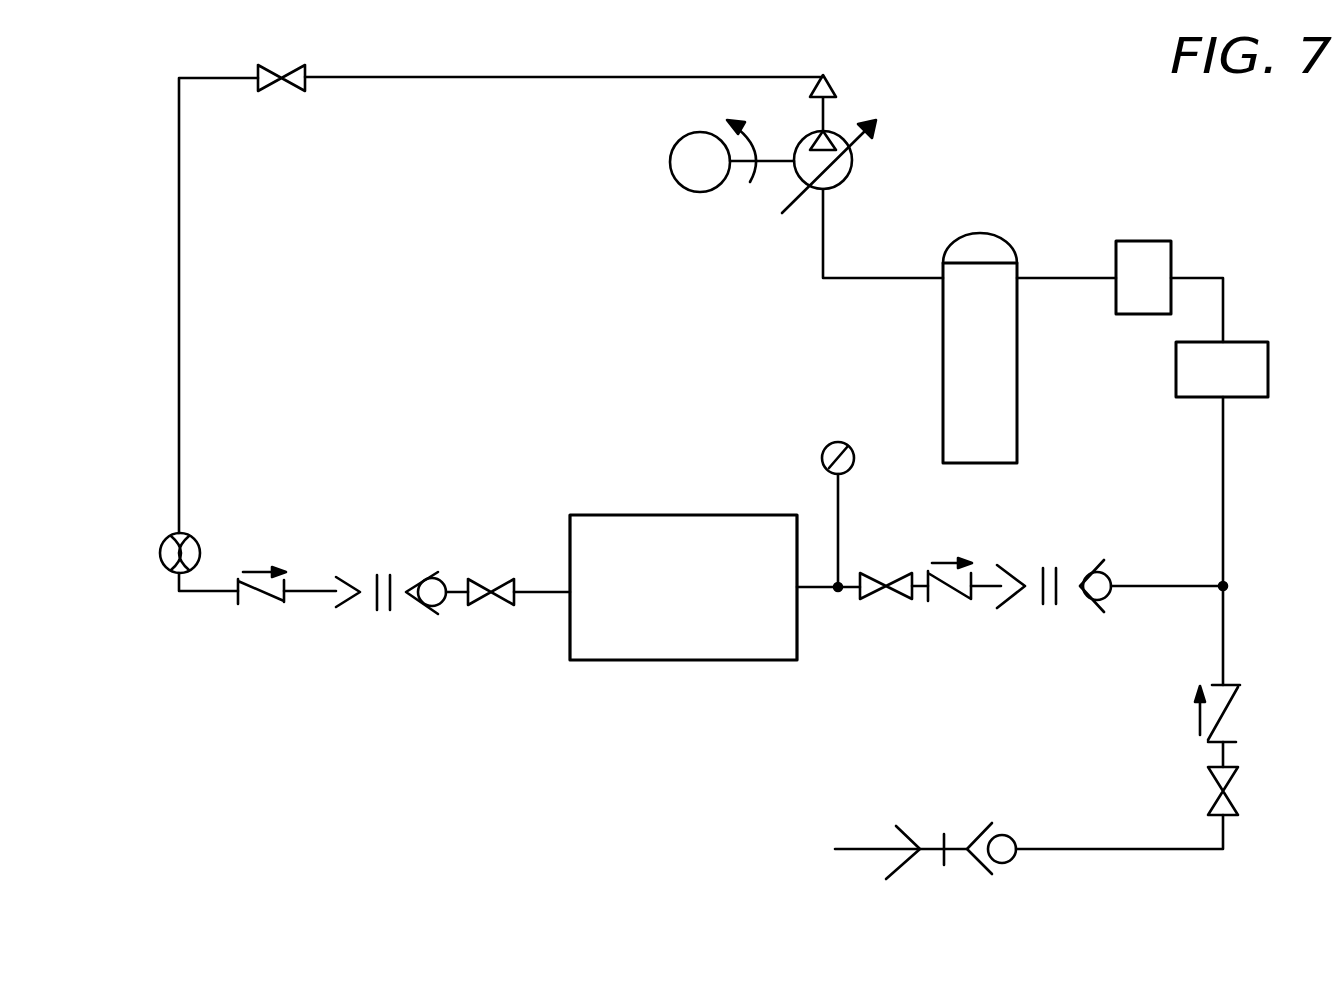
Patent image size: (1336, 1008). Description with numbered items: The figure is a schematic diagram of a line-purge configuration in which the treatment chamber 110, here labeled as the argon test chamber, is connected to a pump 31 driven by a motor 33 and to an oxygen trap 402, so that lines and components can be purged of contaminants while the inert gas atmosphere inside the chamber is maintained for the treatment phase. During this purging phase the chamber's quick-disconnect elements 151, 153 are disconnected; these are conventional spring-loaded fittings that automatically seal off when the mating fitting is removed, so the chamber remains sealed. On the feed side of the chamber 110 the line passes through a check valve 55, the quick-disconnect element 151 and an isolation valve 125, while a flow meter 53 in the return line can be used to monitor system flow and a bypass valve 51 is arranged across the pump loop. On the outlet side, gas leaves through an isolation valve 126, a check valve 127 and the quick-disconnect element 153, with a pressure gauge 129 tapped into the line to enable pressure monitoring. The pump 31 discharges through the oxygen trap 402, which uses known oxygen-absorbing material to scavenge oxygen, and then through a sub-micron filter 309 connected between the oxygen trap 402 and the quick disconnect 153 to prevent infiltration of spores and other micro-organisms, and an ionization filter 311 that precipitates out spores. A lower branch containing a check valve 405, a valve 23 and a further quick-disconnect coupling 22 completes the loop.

The bypass valve 51 is at (300, 90).
The pump 31 is at (832, 128).
The motor 33 is at (693, 193).
The oxygen trap 402 is at (985, 232).
The sub-micron filter 309 is at (1173, 250).
The ionization filter 311 is at (1240, 400).
The flow meter 53 is at (160, 558).
The check valve 55 is at (237, 604).
The quick-disconnect element 151 is at (381, 575).
The isolation valve 125 is at (515, 598).
The treatment chamber 110 is at (680, 514).
The pressure gauge 129 is at (850, 466).
The isolation valve 126 is at (866, 600).
The check valve 127 is at (972, 572).
The quick-disconnect element 153 is at (1107, 572).
The check valve 405 is at (1238, 683).
The drain valve 23 is at (1238, 767).
The quick disconnect coupling 22 is at (1008, 834).